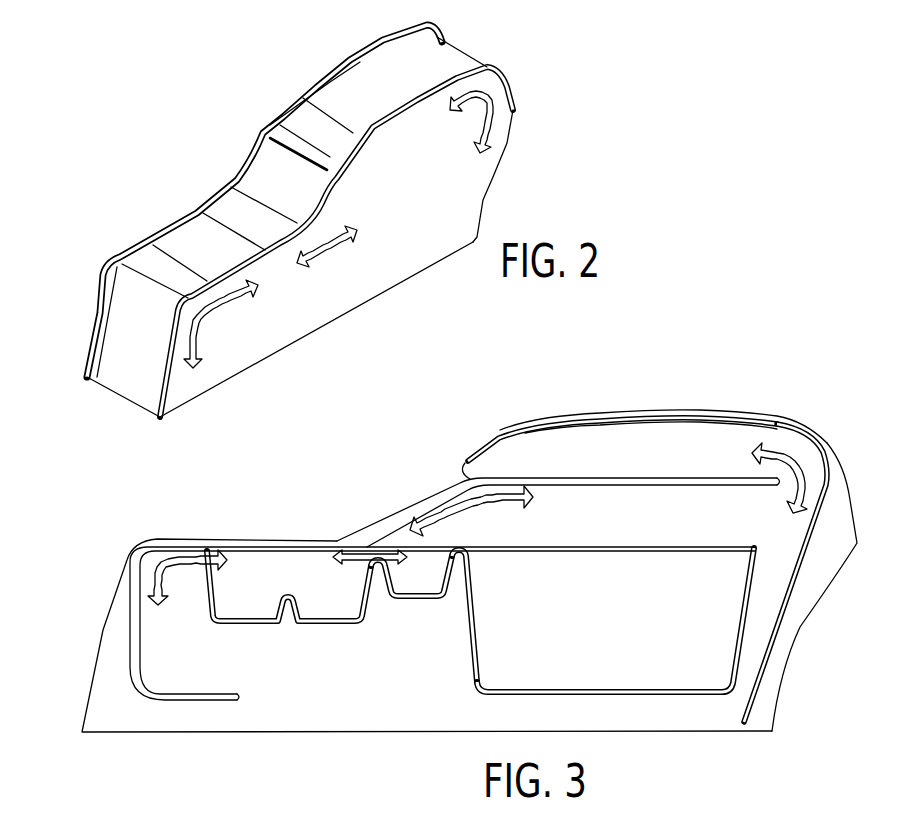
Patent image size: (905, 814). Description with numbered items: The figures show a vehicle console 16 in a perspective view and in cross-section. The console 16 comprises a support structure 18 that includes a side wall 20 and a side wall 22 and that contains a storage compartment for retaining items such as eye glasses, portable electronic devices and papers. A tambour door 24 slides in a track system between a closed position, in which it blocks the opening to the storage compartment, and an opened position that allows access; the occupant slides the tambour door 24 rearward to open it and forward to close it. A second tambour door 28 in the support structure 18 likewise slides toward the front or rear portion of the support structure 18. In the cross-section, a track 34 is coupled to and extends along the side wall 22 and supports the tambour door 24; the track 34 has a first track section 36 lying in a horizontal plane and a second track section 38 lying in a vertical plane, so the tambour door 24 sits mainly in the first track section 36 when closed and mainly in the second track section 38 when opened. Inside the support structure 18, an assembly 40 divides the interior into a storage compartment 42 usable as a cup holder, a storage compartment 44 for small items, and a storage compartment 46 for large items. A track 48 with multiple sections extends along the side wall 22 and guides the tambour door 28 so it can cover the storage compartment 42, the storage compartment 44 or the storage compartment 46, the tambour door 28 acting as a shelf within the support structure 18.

In FIG. 2, the console 16 is at (540, 61).
In FIG. 3, the console 16 is at (107, 510).
In FIG. 2, the support structure 18 is at (493, 171).
In FIG. 3, the support structure 18 is at (857, 545).
In FIG. 2, the side wall 20 is at (423, 231).
In FIG. 2, the side wall 22 is at (318, 78).
In FIG. 3, the side wall 22 is at (790, 423).
In FIG. 2, the tambour door 24 is at (367, 73).
In FIG. 2, the tambour door 28 is at (200, 240).
In FIG. 3, the track 34 is at (687, 417).
In FIG. 3, the first track section 36 is at (617, 413).
In FIG. 3, the second track section 38 is at (783, 620).
In FIG. 3, the assembly 40 is at (474, 653).
In FIG. 3, the storage compartment 42 is at (332, 607).
In FIG. 3, the storage compartment 44 is at (417, 597).
In FIG. 3, the storage compartment 46 is at (623, 677).
In FIG. 3, the track 48 is at (267, 513).